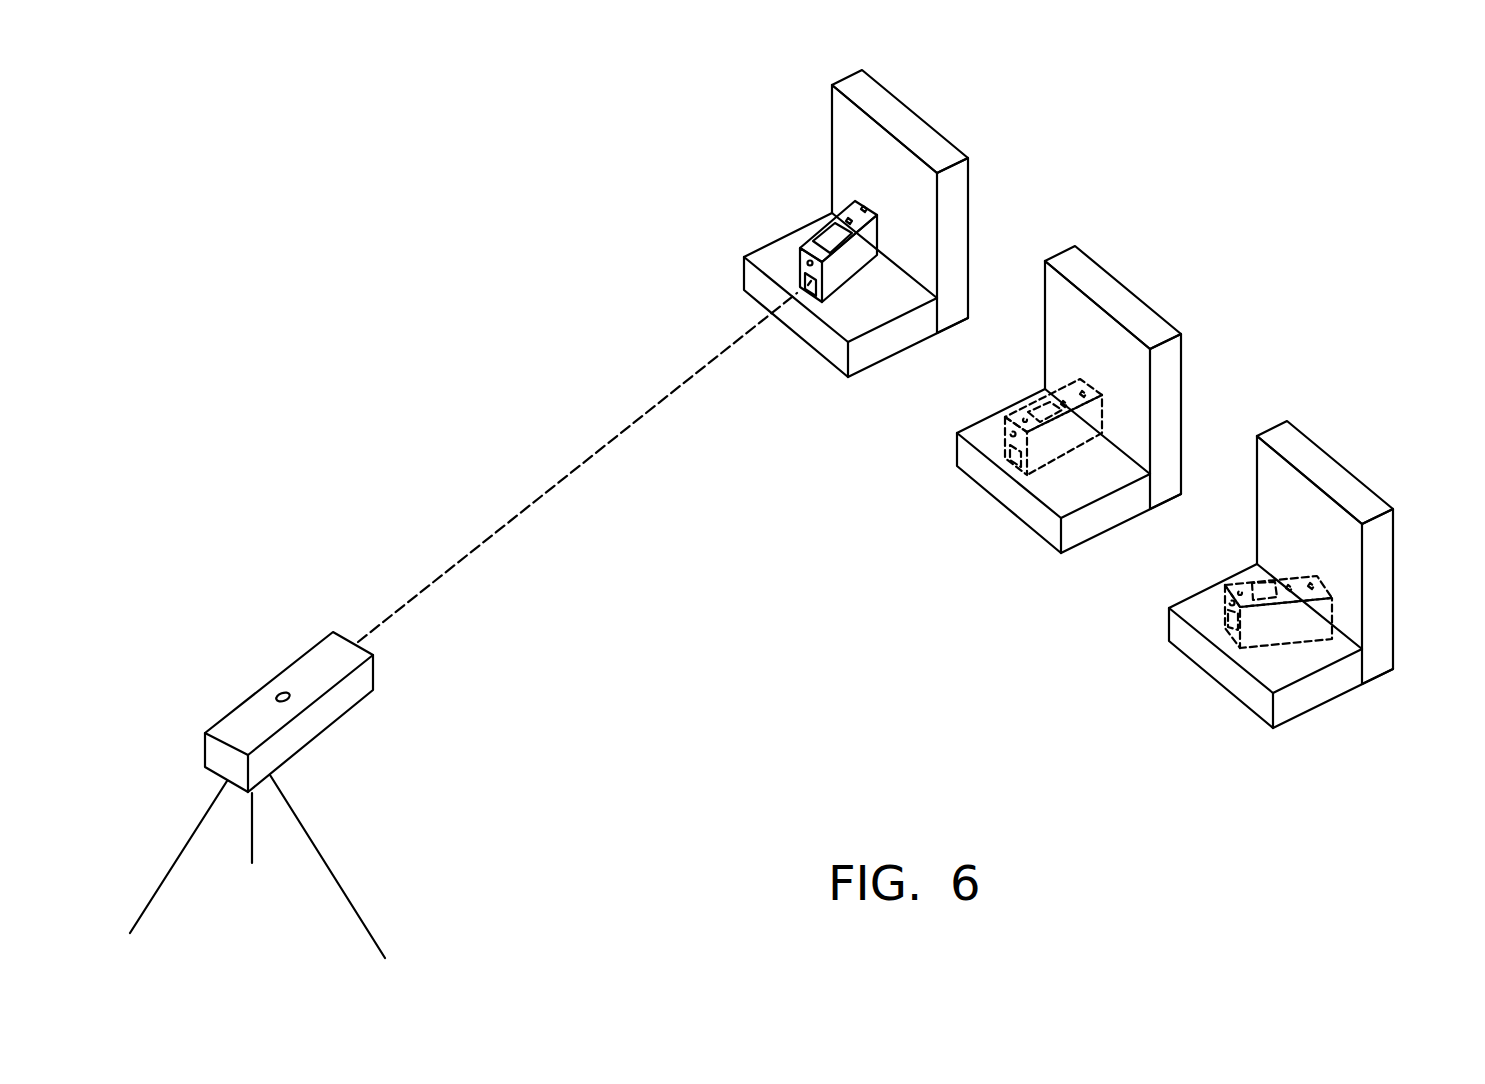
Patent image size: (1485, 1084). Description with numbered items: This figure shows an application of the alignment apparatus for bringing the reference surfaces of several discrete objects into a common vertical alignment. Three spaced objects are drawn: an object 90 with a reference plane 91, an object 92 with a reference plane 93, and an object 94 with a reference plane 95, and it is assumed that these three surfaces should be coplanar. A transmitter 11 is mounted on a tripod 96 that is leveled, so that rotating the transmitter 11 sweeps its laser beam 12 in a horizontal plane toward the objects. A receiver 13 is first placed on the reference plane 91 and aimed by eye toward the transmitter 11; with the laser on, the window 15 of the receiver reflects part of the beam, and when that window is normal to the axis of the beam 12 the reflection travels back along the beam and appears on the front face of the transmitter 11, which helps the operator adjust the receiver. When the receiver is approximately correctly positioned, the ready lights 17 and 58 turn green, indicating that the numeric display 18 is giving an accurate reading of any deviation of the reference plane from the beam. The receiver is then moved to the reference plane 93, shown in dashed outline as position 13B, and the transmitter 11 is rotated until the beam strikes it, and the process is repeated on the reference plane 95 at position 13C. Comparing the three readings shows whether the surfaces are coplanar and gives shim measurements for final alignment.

The transmitter 11 is at (255, 692).
The beam 12 is at (483, 543).
The receiver 13 is at (766, 228).
The receiver at second position 13B is at (1012, 415).
The receiver at third position 13C is at (1240, 587).
The window 15 is at (803, 280).
The ready light 17 is at (808, 247).
The numeric display 18 is at (833, 232).
The ready light 58 is at (807, 265).
The object 90 is at (952, 203).
The reference plane 91 is at (843, 318).
The object 92 is at (1163, 375).
The reference plane 93 is at (1053, 493).
The object 94 is at (1377, 550).
The reference plane 95 is at (1267, 667).
The tripod 96 is at (318, 848).